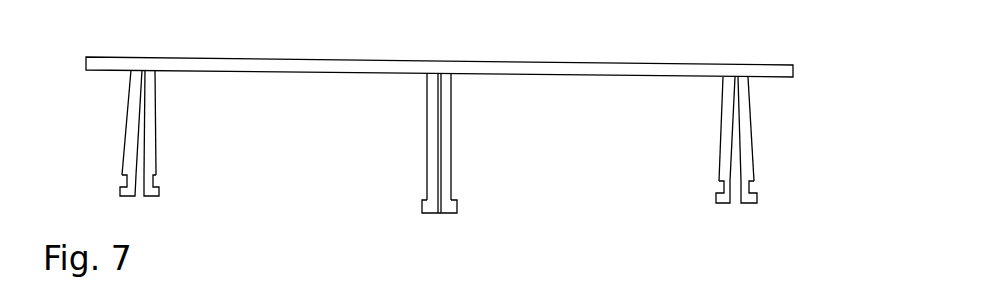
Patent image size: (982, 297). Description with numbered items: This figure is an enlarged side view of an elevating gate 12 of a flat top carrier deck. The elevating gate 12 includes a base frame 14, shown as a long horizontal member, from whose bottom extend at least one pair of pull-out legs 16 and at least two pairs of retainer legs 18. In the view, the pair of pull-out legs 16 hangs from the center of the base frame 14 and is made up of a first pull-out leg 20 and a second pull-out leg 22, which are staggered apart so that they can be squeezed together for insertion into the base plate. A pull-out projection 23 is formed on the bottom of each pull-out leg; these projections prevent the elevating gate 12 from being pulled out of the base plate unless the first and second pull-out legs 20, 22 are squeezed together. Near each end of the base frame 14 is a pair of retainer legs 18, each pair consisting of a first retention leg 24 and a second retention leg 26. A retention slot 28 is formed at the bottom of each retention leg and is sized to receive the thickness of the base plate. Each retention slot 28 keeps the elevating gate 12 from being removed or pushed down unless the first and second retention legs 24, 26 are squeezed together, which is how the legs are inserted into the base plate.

The elevating gate 12 is at (817, 48).
The base frame 14 is at (282, 58).
The pull-out legs 16 is at (453, 152).
The retainer legs 18 is at (122, 128).
The first pull-out leg 20 is at (428, 117).
The second pull-out leg 22 is at (447, 178).
The pull-out projection 23 is at (422, 207).
The first retention leg 24 is at (127, 167).
The second retention leg 26 is at (157, 130).
The retention slot 28 is at (162, 185).